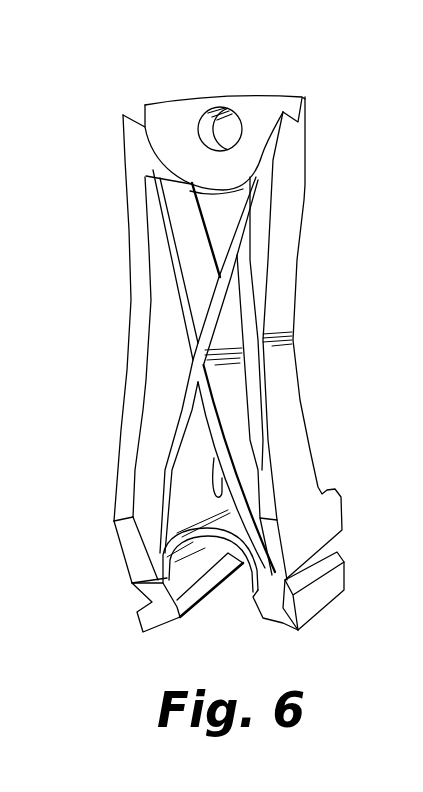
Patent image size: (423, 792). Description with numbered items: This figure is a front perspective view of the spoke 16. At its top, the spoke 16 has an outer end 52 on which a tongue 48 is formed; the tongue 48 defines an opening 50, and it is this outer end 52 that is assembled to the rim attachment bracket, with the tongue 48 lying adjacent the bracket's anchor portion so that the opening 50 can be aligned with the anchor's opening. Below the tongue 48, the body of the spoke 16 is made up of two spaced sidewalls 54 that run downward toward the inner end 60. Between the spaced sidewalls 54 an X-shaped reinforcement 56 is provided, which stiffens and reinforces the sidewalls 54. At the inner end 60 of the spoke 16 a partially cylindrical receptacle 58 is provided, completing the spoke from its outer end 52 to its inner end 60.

The spoke 16 is at (302, 277).
The tongue 48 is at (190, 122).
The opening 50 is at (223, 118).
The outer end 52 is at (260, 97).
The sidewalls 54 is at (133, 422).
The X-shaped reinforcement 56 is at (227, 342).
The partially cylindrical receptacle 58 is at (133, 582).
The inner end 60 is at (285, 630).